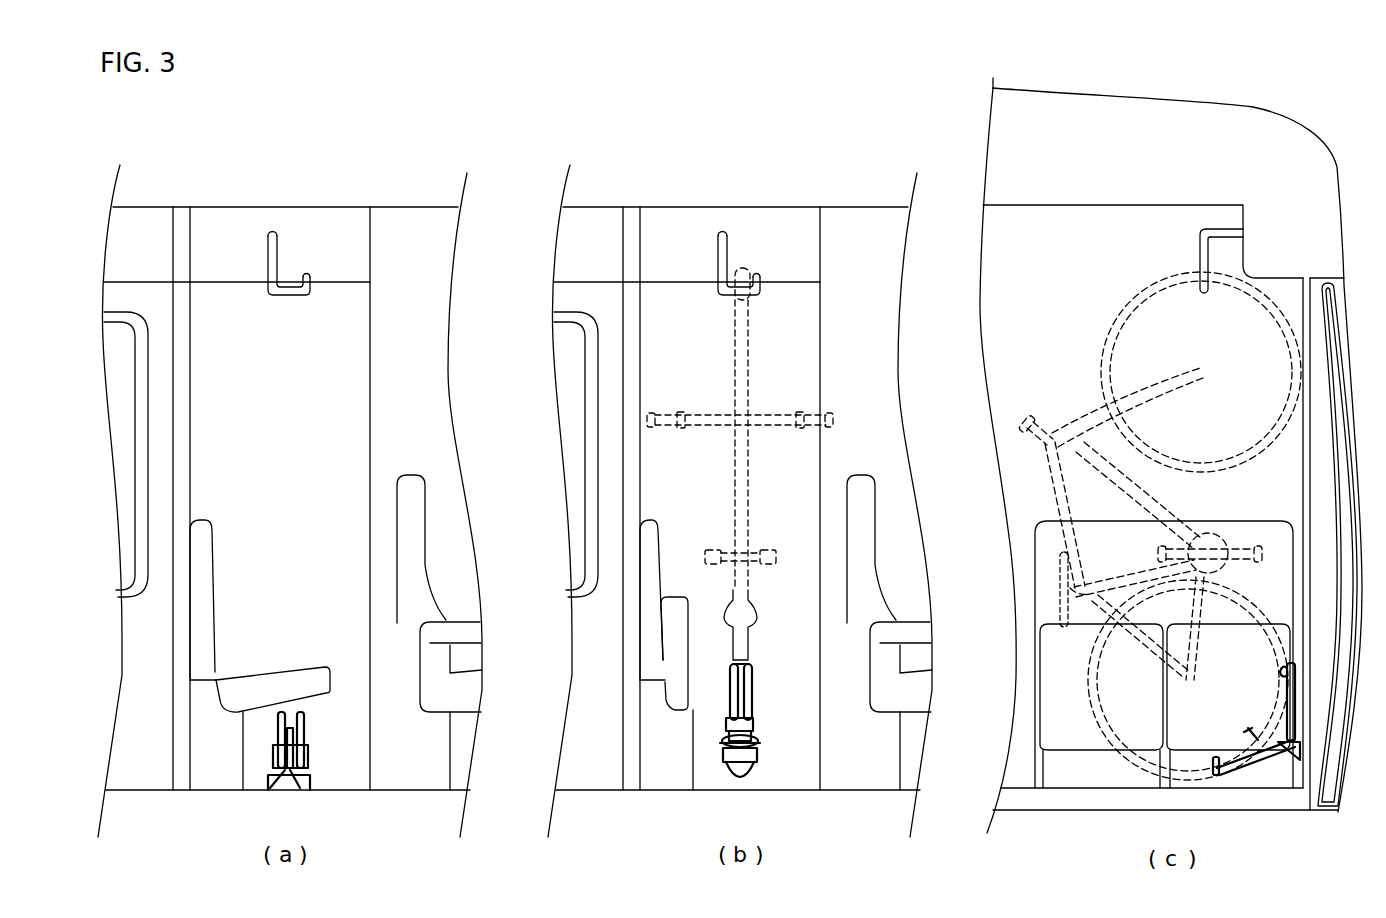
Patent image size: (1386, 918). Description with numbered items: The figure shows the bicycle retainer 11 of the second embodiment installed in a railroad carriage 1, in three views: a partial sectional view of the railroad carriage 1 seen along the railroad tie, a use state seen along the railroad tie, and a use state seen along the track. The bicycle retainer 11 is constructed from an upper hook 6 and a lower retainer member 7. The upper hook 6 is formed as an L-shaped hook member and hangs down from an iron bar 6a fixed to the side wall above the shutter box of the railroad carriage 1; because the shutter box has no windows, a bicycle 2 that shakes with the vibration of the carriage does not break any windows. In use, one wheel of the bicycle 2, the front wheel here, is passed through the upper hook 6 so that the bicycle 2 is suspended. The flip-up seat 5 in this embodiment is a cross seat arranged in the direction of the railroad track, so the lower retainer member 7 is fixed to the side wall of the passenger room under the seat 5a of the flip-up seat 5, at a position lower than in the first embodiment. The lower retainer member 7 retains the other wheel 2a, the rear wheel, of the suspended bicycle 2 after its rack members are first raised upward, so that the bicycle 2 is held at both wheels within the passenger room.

The railroad carriage 1 is at (404, 152).
The bicycle 2 is at (974, 524).
The wheel 2a is at (732, 310).
The flip-up seat 5 is at (744, 623).
The seat 5a is at (285, 683).
The upper hook 6 is at (773, 257).
The iron bar 6a is at (1223, 233).
The lower retainer member 7 is at (313, 753).
The bicycle retainer 11 is at (784, 518).